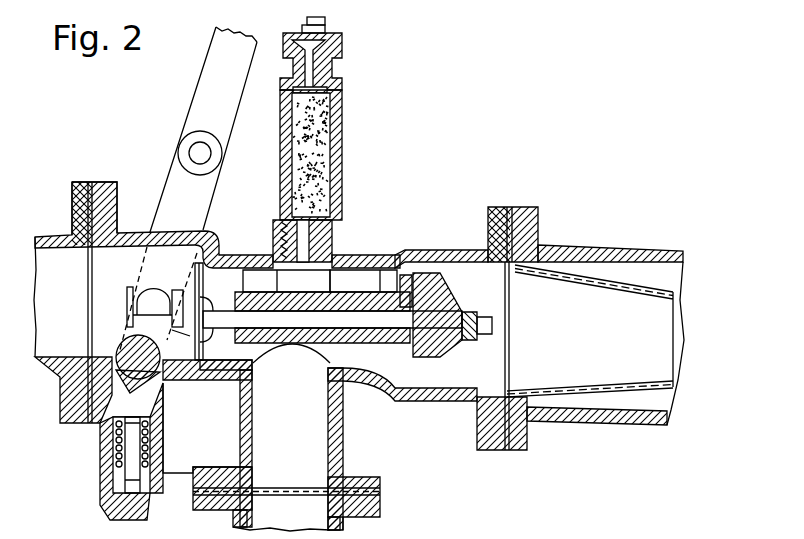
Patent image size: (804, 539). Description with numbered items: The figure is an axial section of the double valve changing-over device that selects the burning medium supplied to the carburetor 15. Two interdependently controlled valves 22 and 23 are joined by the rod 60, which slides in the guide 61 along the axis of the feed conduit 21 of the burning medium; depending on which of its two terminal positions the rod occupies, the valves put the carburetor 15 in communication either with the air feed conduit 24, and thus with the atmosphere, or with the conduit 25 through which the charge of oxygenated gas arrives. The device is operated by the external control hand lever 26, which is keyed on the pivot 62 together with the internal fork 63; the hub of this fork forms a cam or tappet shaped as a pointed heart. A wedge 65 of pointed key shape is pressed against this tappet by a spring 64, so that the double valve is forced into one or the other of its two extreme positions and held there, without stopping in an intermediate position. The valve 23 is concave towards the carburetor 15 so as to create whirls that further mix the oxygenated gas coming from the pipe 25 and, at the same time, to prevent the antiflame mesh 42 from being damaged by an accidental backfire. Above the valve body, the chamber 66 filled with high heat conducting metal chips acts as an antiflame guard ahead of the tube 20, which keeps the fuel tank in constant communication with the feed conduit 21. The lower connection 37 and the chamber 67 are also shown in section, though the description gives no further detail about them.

The carburetor 15 is at (235, 526).
The tube 20 is at (322, 18).
The feed conduit 21 is at (343, 318).
The valve 22 is at (202, 350).
The valve 23 is at (442, 292).
The air feed conduit 24 is at (46, 237).
The oxygenated gas conduit 25 is at (610, 249).
The external control hand lever 26 is at (212, 76).
The pipe connection 37 is at (374, 528).
The antiflame mesh 42 is at (637, 392).
The rod 60 is at (343, 288).
The guide 61 is at (373, 288).
The pivot 62 is at (118, 351).
The internal fork 63 is at (156, 352).
The spring 64 is at (116, 450).
The wedge 65 is at (140, 406).
The chamber 66 is at (310, 139).
The chamber 67 is at (313, 440).